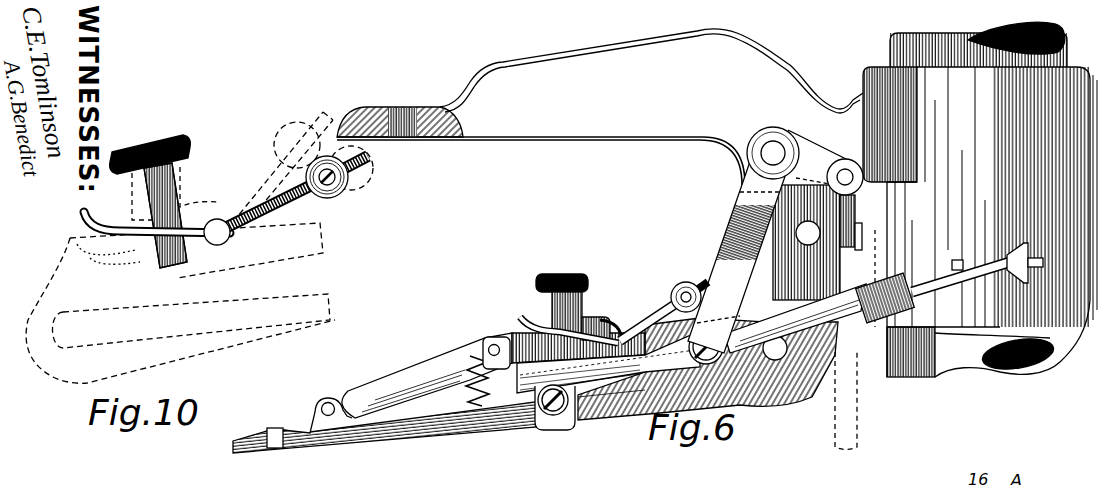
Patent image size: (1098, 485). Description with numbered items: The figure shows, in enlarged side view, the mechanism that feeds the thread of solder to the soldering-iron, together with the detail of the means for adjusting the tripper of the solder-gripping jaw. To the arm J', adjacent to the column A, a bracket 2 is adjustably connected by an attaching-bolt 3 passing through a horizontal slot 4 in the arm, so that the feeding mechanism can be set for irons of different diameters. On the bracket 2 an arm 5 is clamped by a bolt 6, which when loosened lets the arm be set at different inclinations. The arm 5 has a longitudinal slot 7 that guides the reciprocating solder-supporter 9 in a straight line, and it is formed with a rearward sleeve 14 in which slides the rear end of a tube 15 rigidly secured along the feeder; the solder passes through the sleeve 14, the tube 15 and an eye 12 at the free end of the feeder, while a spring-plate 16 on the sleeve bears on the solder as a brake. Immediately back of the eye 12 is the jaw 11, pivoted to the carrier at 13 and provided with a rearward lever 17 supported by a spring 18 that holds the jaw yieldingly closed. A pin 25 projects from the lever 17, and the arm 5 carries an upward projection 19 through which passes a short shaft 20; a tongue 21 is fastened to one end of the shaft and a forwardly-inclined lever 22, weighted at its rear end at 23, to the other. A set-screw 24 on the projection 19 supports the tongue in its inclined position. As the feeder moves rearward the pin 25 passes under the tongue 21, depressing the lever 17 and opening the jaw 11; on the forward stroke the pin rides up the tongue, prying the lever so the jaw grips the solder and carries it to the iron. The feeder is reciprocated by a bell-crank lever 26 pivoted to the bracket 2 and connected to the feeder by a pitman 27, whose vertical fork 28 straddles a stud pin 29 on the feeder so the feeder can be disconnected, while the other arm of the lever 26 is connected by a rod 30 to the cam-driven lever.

In FIG. 6, the bracket 2 is at (824, 256).
In FIG. 6, the attaching-bolt 3 is at (802, 228).
In FIG. 6, the horizontal slot 4 is at (865, 244).
In FIG. 6, the arm 5 is at (629, 408).
In FIG. 6, the bolt 6 is at (784, 353).
In FIG. 6, the longitudinal slot 7 is at (743, 384).
In FIG. 6, the solder-supporter 9 is at (381, 426).
In FIG. 6, the jaw 11 is at (300, 428).
In FIG. 6, the eye 12 is at (275, 428).
In FIG. 6, the pivot 13 is at (328, 402).
In FIG. 6, the sleeve 14 is at (972, 287).
In FIG. 6, the tube 15 is at (425, 397).
In FIG. 6, the spring-plate 16 is at (975, 268).
In FIG. 6, the lever 17 is at (470, 372).
In FIG. 6, the spring 18 is at (476, 352).
In FIG. 6, the upward projection 19 is at (590, 318).
In FIG. 10, the short shaft 20 is at (222, 242).
In FIG. 6, the short shaft 20 is at (620, 319).
In FIG. 10, the tongue 21 is at (140, 237).
In FIG. 6, the tongue 21 is at (560, 320).
In FIG. 10, the lever 22 is at (292, 195).
In FIG. 6, the lever 22 is at (664, 311).
In FIG. 10, the weight 23 is at (332, 192).
In FIG. 6, the weight 23 is at (685, 283).
In FIG. 10, the set-screw 24 is at (178, 197).
In FIG. 6, the set-screw 24 is at (568, 278).
In FIG. 6, the pin 25 is at (496, 343).
In FIG. 6, the bell-crank lever 26 is at (775, 240).
In FIG. 6, the pitman 27 is at (617, 361).
In FIG. 6, the fork 28 is at (540, 430).
In FIG. 6, the stud pin 29 is at (565, 430).
In FIG. 6, the rod 30 is at (858, 212).
In FIG. 6, the column A is at (980, 199).
In FIG. 6, the arm J is at (600, 107).